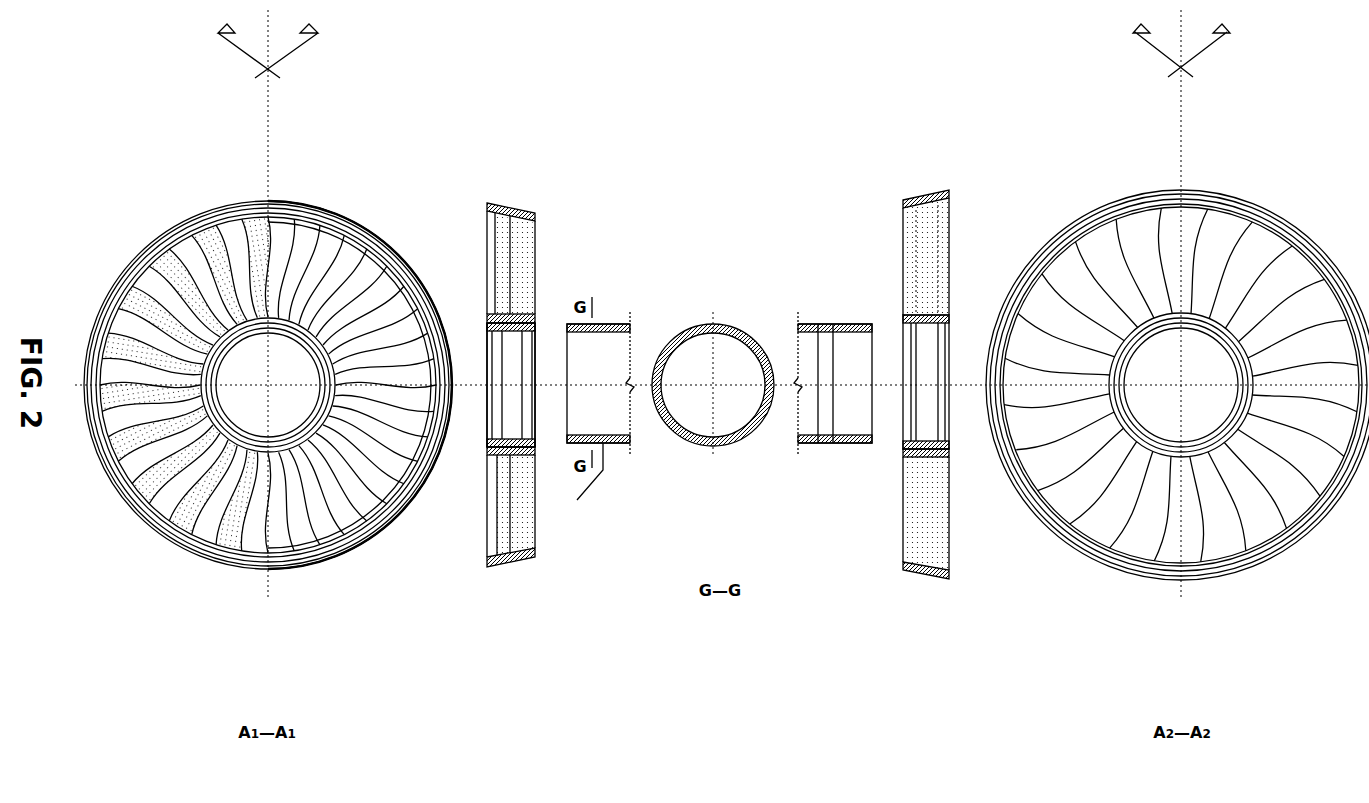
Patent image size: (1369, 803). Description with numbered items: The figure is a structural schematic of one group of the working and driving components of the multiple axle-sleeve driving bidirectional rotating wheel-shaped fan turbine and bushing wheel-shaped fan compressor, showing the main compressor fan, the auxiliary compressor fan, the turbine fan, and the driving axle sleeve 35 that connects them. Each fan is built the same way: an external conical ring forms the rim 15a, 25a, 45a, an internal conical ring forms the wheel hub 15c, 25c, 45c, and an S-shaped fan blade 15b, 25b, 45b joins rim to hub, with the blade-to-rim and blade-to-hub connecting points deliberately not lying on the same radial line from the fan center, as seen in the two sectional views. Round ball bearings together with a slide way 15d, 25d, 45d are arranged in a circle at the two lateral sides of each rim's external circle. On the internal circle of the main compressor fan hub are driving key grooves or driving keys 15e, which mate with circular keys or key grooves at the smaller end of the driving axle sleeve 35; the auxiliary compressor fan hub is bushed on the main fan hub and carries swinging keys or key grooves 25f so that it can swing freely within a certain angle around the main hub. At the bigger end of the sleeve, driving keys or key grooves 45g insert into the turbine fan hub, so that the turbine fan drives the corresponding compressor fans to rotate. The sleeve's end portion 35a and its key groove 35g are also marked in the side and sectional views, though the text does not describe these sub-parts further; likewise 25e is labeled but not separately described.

The rim 15a is at (204, 520).
The fan blade 15b is at (212, 235).
The wheel hub 15c is at (160, 512).
The ball bearing and slide way 15d is at (176, 223).
The driving keys or key grooves of the compressor wheel-shaped fan 15e is at (273, 525).
The rim 25a is at (336, 548).
The fan blade 25b is at (233, 207).
The wheel hub 25c is at (303, 548).
The ball bearing and slide way 25d is at (293, 205).
The curved blades 25e is at (225, 530).
The swinging keys or key grooves of the compressor wheel-shaped fan 25f is at (535, 312).
The driving axle sleeve 35 is at (618, 443).
The sleeve end portion 35a is at (573, 443).
The sleeve groove 35g is at (765, 447).
The rim 45a is at (926, 573).
The fan blade 45b is at (901, 567).
The wheel hub 45c is at (950, 465).
The ball bearing and slide way 45d is at (905, 198).
The driving keys or key grooves of the turbine wheel-shaped fan 45g is at (931, 196).